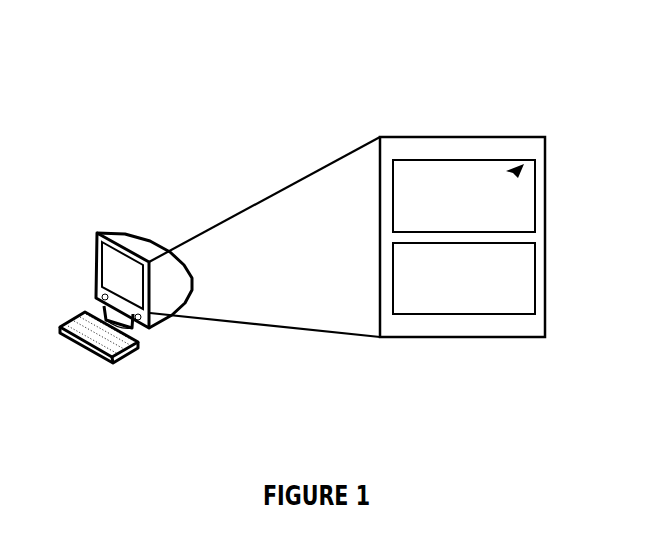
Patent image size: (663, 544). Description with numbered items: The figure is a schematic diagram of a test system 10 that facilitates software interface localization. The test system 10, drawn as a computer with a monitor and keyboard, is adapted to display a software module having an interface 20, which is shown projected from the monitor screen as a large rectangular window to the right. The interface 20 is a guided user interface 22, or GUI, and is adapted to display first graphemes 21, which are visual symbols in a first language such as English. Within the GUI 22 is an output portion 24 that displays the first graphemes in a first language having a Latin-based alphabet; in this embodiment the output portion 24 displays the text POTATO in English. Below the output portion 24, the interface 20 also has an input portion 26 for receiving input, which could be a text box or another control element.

The test system 10 is at (99, 231).
The interface 20 is at (518, 80).
The first graphemes 21 is at (526, 166).
The guided user interface 22 is at (462, 338).
The output portion 24 is at (536, 197).
The input portion 26 is at (536, 280).